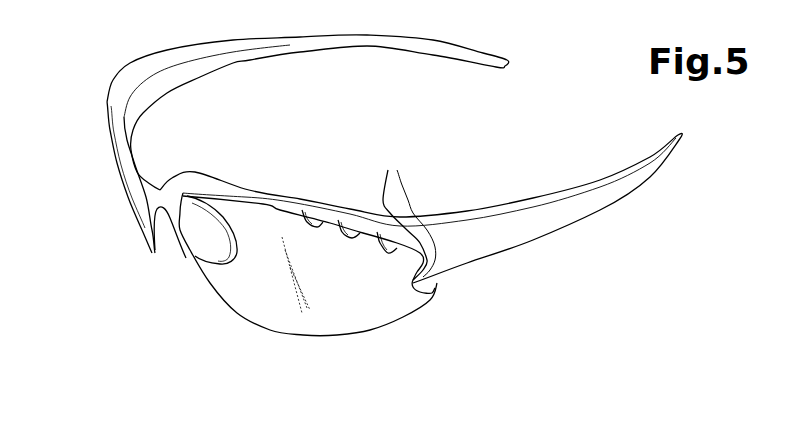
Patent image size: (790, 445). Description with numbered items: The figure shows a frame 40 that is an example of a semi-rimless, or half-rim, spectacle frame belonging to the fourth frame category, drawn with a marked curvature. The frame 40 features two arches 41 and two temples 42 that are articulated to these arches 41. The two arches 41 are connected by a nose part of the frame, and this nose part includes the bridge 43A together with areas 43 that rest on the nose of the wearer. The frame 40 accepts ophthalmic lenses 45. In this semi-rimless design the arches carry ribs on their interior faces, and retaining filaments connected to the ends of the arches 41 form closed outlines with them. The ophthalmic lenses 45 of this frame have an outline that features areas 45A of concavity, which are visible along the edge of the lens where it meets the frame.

The frame 40 is at (592, 268).
The arches 41 is at (115, 105).
The temples 42 is at (255, 57).
The areas resting on the nose 43 is at (213, 247).
The bridge 43A is at (160, 185).
The ophthalmic lenses 45 is at (128, 188).
The areas of concavity 45A is at (314, 210).